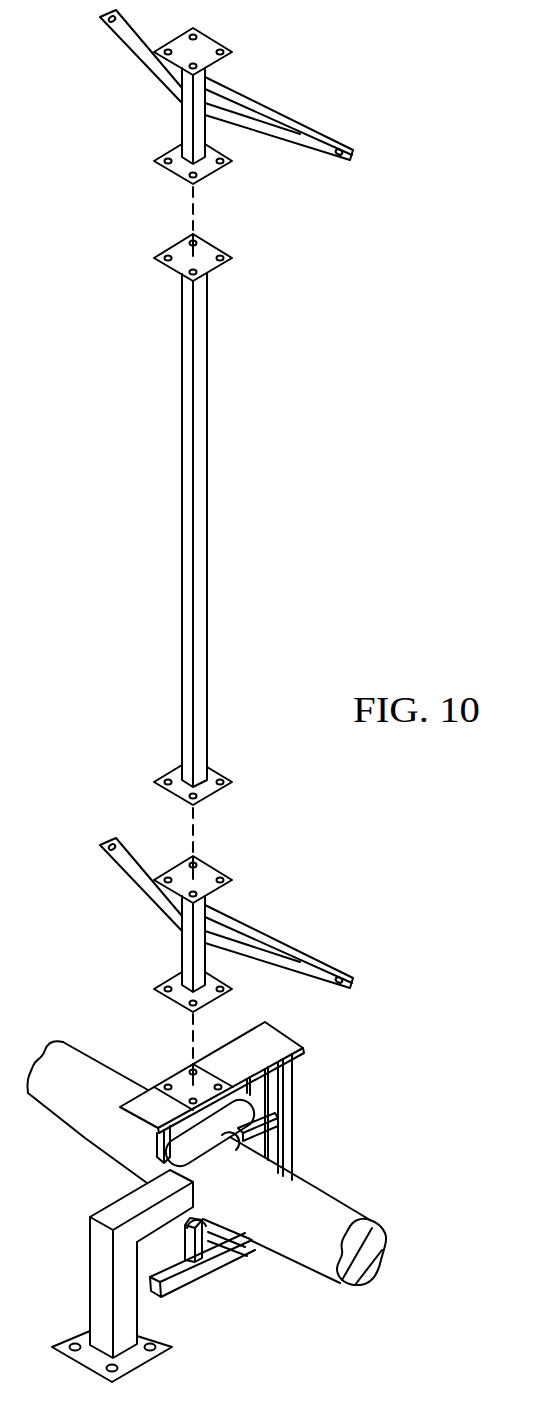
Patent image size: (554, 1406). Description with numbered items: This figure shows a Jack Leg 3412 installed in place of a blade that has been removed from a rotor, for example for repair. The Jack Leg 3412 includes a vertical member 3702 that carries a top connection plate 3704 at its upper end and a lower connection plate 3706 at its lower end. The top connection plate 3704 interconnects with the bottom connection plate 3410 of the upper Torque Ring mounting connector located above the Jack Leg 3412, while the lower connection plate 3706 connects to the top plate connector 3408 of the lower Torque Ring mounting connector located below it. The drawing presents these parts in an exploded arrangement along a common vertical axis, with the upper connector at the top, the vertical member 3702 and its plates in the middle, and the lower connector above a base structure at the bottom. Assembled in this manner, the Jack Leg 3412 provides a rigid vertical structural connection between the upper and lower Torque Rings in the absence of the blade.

The bottom connection plate 3410 is at (211, 177).
The top connection plate 3704 is at (216, 244).
The vertical member 3702 is at (207, 420).
The Jack Leg 3412 is at (196, 520).
The lower connection plate 3706 is at (215, 801).
The top plate connector 3408 is at (216, 866).